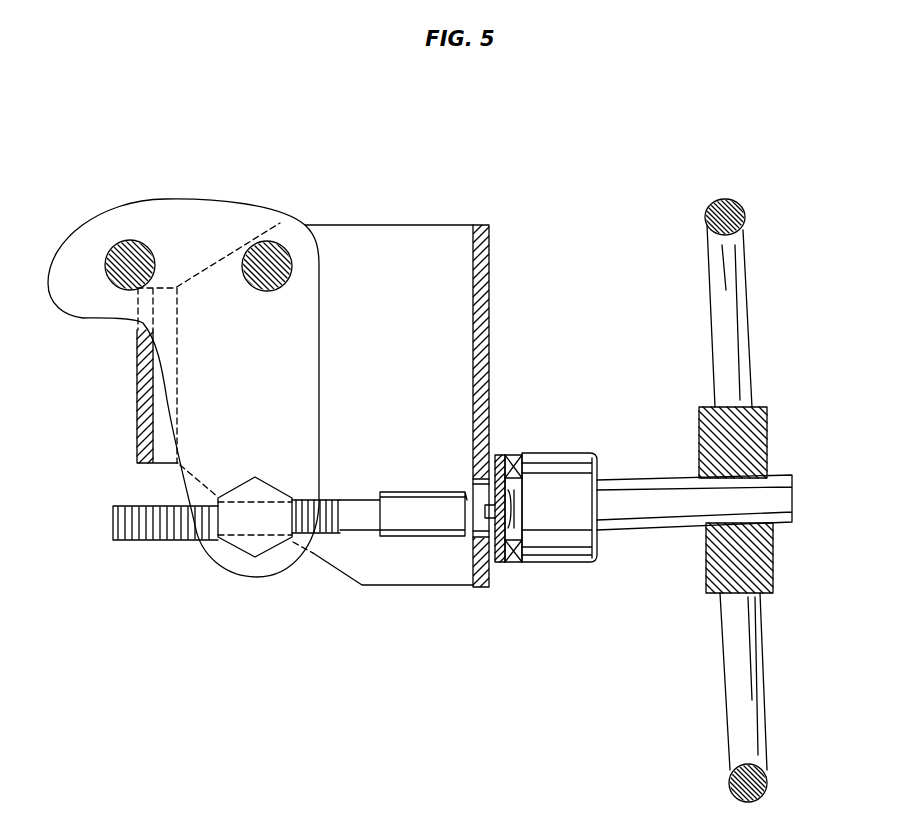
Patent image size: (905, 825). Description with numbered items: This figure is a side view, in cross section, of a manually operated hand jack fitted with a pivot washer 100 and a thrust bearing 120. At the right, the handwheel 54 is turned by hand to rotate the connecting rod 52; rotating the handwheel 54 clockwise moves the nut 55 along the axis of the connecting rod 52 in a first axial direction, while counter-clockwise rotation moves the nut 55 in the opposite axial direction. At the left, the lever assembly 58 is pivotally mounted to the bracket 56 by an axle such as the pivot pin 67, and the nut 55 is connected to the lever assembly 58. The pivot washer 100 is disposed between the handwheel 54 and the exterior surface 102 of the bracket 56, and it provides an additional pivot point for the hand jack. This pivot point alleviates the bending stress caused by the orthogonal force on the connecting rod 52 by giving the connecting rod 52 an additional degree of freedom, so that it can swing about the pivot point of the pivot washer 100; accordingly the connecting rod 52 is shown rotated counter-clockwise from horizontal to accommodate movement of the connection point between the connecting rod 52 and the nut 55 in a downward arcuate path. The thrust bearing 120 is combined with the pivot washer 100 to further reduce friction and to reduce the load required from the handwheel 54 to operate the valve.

The connecting rod 52 is at (113, 522).
The handwheel 54 is at (745, 232).
The nut 55 is at (227, 543).
The bracket 56 is at (435, 182).
The lever assembly 58 is at (166, 200).
The pivot pin 67 is at (290, 247).
The pivot washer 100 is at (502, 588).
The exterior surface 102 is at (490, 252).
The thrust bearing 120 is at (513, 455).